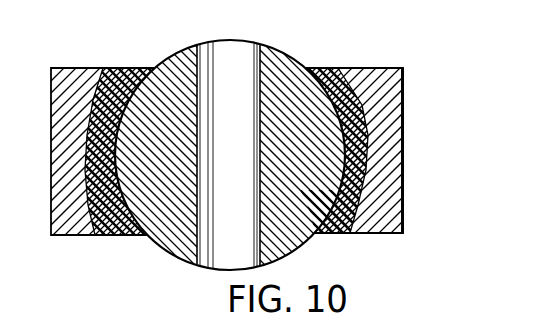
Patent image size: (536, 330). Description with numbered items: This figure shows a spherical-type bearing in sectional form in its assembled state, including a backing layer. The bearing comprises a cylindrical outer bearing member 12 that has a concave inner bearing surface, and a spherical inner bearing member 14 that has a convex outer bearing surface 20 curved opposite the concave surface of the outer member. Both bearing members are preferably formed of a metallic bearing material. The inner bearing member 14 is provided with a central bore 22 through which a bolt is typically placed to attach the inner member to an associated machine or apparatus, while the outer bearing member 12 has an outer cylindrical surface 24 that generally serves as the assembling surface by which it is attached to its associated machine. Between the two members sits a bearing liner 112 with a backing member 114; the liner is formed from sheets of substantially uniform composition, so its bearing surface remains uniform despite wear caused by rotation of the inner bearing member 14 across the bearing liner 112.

The outer bearing member 12 is at (388, 168).
The inner bearing member 14 is at (286, 66).
The convex outer bearing surface 20 is at (157, 68).
The central bore 22 is at (248, 52).
The outer cylindrical surface 24 is at (437, 56).
The bearing liner 112 is at (325, 68).
The backing member 114 is at (353, 234).